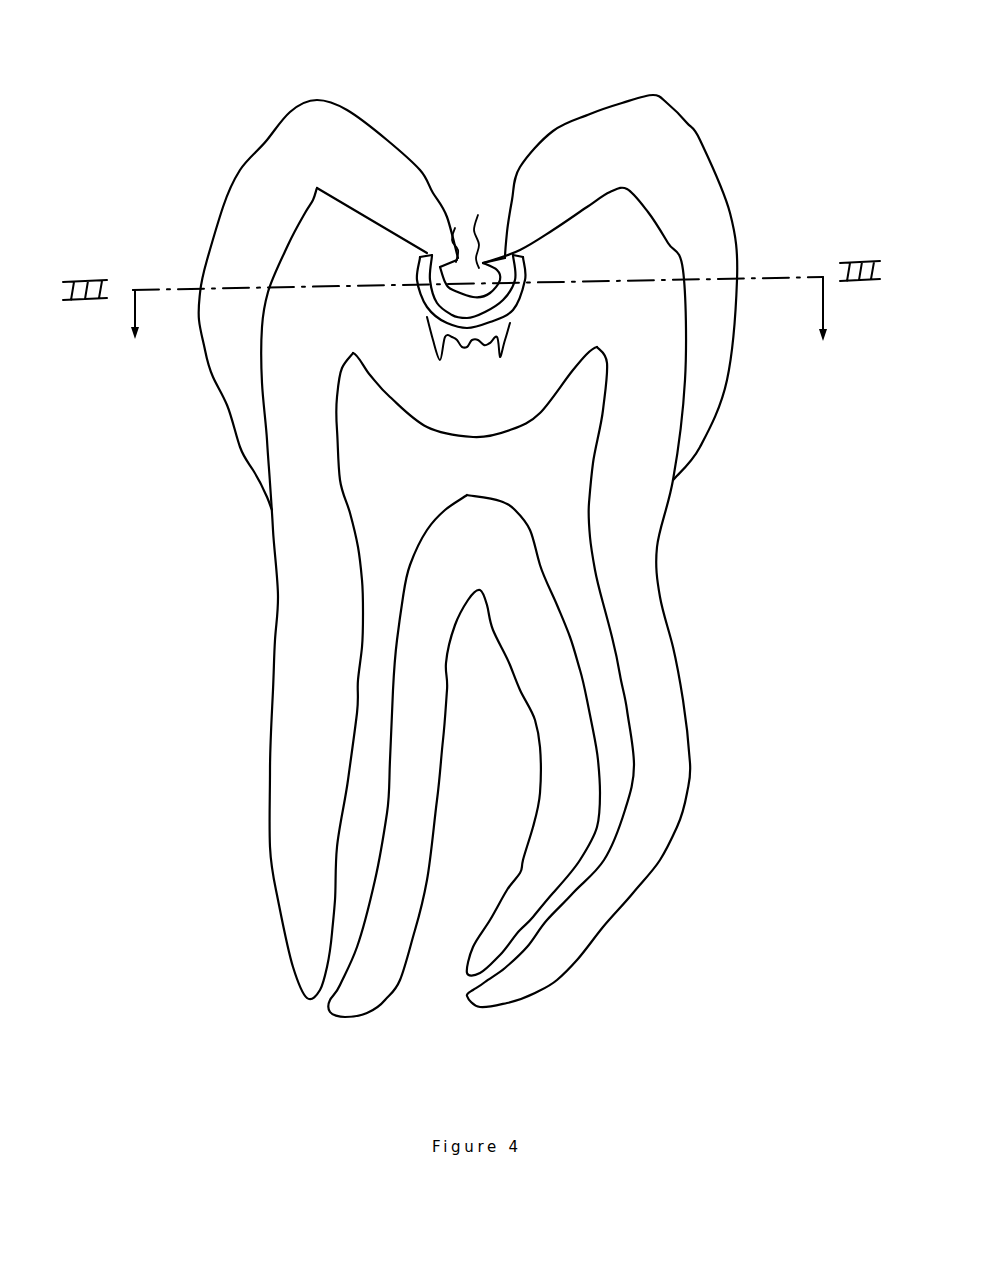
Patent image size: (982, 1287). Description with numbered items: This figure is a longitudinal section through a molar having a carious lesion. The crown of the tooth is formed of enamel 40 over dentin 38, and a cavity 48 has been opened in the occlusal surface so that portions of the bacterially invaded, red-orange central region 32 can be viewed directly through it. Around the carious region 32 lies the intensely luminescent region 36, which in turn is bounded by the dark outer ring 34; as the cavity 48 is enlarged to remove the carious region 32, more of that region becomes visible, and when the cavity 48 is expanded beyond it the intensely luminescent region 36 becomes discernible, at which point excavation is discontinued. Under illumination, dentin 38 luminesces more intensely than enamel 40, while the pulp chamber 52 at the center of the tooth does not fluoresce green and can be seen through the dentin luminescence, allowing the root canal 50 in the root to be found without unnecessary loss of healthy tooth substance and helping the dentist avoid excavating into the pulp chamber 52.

The red-orange central region 32 is at (457, 260).
The dark outer ring 34 is at (420, 307).
The intensely luminescent region 36 is at (420, 257).
The dentin 38 is at (307, 503).
The enamel 40 is at (247, 390).
The cavity 48 is at (471, 210).
The root canal 50 is at (603, 680).
The pulp chamber 52 is at (547, 470).